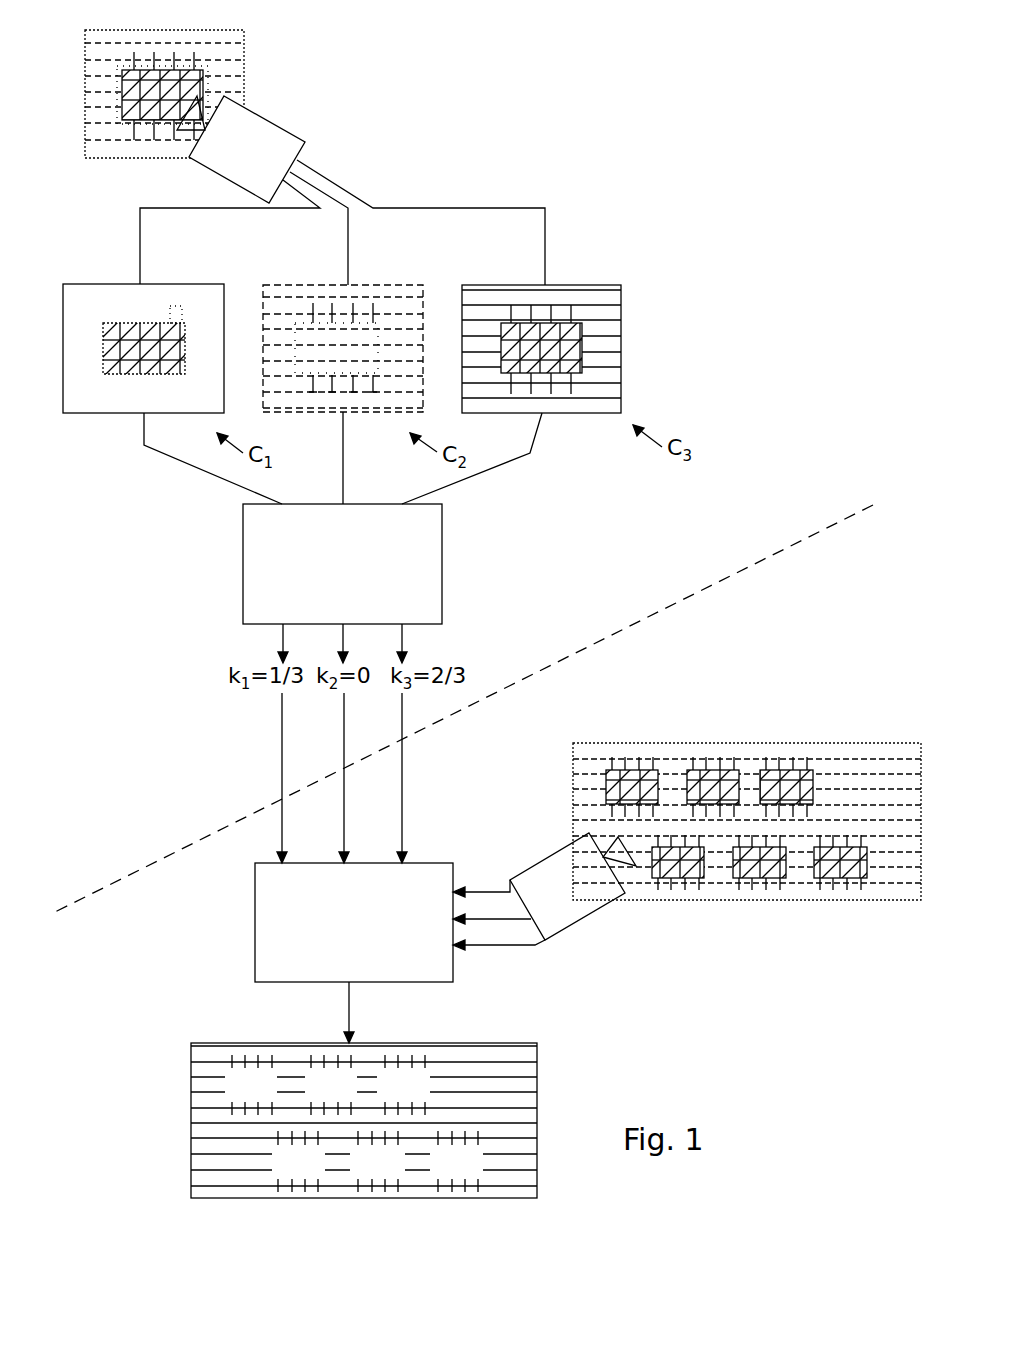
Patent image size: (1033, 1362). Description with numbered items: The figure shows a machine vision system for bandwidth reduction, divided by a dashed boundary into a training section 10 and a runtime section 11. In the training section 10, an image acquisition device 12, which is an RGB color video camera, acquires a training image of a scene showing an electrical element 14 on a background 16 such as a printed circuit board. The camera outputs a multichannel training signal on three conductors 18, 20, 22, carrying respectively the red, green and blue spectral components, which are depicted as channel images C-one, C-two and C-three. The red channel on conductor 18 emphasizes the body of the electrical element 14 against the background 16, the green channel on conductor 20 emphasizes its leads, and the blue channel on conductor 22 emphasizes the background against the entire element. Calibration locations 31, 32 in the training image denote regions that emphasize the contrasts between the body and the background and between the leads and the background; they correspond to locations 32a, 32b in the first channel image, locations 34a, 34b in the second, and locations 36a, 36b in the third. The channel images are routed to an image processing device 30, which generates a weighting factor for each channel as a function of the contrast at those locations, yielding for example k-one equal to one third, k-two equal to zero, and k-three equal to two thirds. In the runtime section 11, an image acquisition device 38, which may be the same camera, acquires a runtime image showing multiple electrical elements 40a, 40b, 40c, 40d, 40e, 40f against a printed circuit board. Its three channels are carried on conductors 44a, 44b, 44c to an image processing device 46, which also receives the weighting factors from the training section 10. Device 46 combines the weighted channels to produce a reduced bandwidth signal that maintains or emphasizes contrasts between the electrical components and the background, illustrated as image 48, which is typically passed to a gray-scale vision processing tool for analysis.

The training section 10 is at (746, 495).
The runtime section 11 is at (838, 599).
The image acquisition device 12 is at (292, 135).
The electrical element 14 is at (203, 86).
The background 16 is at (110, 150).
The conductor 18 is at (140, 240).
The conductor 20 is at (350, 240).
The conductor 22 is at (545, 240).
The image processing device 30 is at (438, 573).
The calibration location 31 is at (115, 92).
The calibration location 32 is at (200, 53).
The location 32a is at (98, 367).
The location 32b is at (180, 315).
The location 34a is at (299, 370).
The location 34b is at (378, 308).
The location 36a is at (500, 375).
The location 36b is at (575, 305).
The image acquisition device 38 is at (567, 930).
The electrical element 40a is at (643, 770).
The electrical element 40b is at (722, 770).
The electrical element 40c is at (800, 770).
The electrical element 40d is at (667, 880).
The electrical element 40e is at (747, 878).
The electrical element 40f is at (827, 878).
The conductor 44a is at (490, 892).
The conductor 44b is at (477, 920).
The conductor 44c is at (483, 947).
The image processing device 46 is at (428, 967).
The image 48 is at (220, 1117).